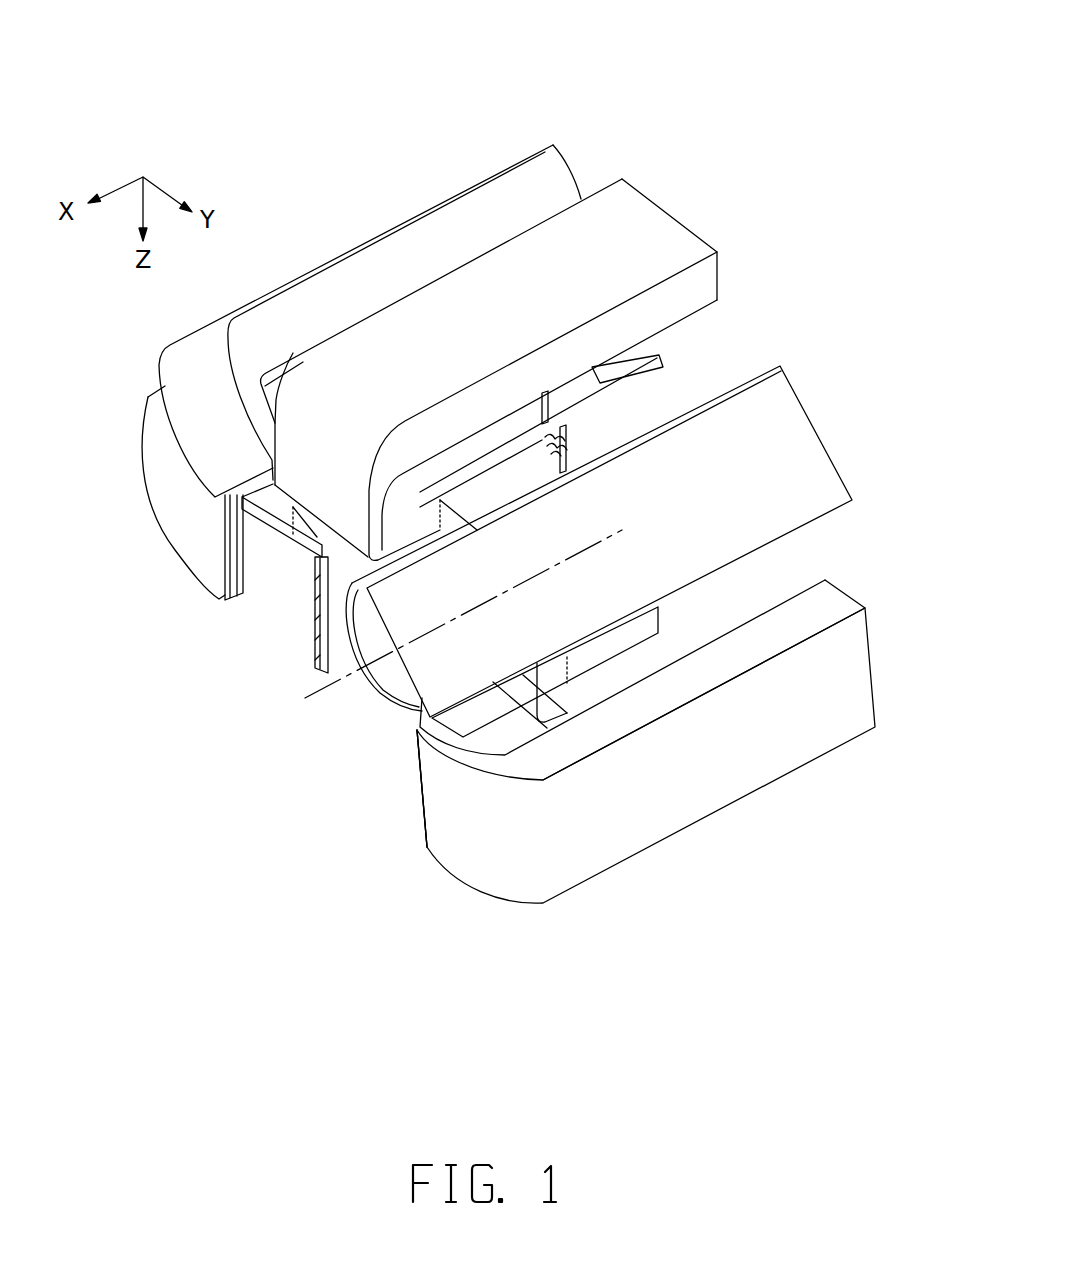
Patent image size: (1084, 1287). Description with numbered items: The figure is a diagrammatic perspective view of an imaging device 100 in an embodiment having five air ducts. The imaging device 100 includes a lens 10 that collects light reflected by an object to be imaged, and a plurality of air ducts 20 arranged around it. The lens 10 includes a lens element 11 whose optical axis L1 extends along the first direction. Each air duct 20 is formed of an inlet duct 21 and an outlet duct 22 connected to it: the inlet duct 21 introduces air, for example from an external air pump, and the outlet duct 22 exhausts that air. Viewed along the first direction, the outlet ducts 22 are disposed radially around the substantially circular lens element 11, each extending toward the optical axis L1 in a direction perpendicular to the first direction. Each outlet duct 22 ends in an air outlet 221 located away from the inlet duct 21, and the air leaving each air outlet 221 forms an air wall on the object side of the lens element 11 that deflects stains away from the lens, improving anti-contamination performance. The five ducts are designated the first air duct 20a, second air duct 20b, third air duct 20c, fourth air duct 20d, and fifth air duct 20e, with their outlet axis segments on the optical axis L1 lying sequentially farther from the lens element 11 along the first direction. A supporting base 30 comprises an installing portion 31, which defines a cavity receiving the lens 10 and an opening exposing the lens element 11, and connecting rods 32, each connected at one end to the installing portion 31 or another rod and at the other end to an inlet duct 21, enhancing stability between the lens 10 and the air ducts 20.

The imaging device 100 is at (558, 91).
The lens 10 is at (523, 482).
The lens element 11 is at (400, 680).
The air duct 20 is at (499, 580).
The first air duct 20a is at (157, 518).
The second air duct 20b is at (427, 237).
The third air duct 20c is at (644, 218).
The fourth air duct 20d is at (792, 437).
The fifth air duct 20e is at (588, 968).
The inlet duct 21 is at (600, 838).
The outlet duct 22 is at (450, 832).
The air outlet 221 is at (418, 807).
The supporting base 30 is at (265, 712).
The installing portion 31 is at (340, 628).
The connecting rod 32 is at (285, 517).
The optical axis L1 is at (333, 687).